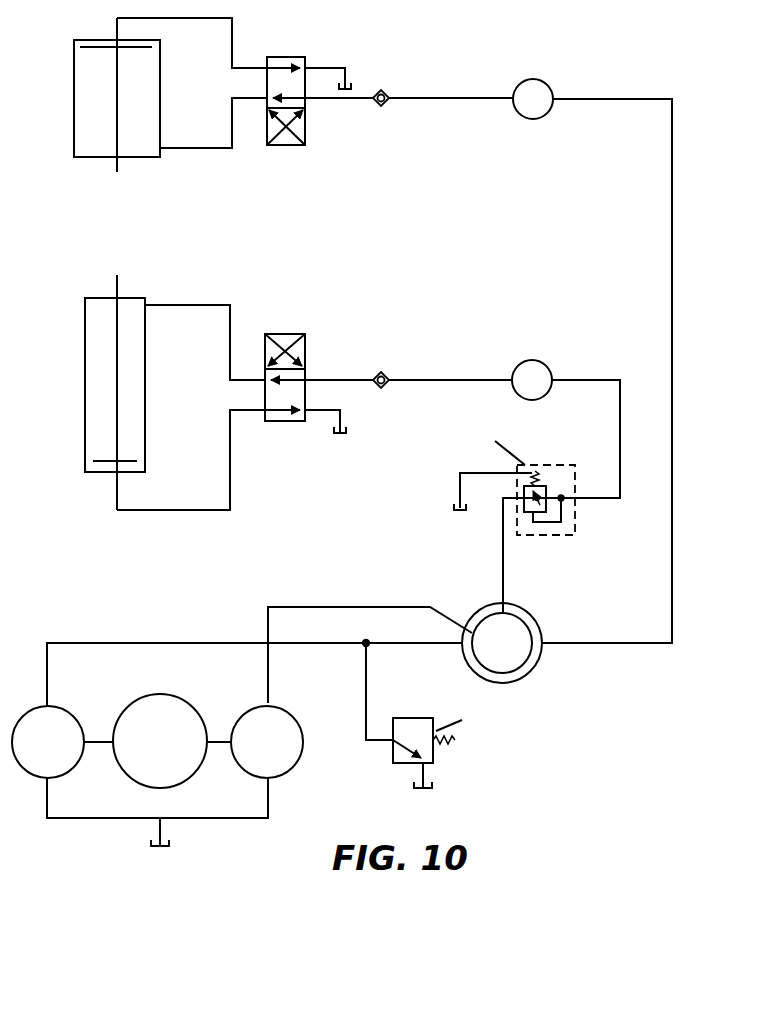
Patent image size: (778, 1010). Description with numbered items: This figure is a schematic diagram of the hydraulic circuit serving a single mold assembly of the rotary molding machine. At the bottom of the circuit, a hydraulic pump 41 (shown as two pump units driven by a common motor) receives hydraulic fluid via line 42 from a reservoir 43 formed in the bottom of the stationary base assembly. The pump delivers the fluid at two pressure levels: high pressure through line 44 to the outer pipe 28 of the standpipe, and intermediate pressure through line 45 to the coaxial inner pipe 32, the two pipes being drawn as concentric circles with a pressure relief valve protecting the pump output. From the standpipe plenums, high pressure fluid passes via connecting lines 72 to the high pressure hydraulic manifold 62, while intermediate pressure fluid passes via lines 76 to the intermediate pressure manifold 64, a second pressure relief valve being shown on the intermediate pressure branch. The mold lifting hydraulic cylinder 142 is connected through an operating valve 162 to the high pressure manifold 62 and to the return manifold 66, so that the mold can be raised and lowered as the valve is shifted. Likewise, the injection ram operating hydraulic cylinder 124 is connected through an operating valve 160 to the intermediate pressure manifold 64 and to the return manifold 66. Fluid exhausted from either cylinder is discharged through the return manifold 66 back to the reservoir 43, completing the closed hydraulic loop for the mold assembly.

The mold lifting hydraulic cylinder 142 is at (74, 95).
The operating valve 162 is at (300, 57).
The return manifold 66 is at (348, 84).
The high pressure hydraulic manifold 62 is at (547, 83).
The connecting lines 72 is at (672, 244).
The injection ram operating hydraulic cylinder 124 is at (85, 349).
The injection ram operating valve 160 is at (300, 331).
The intermediate pressure manifold 64 is at (535, 360).
The lines 76 is at (622, 420).
The outer pipe 28 is at (530, 614).
The inner pipe 32 is at (471, 660).
The high pressure line 44 is at (132, 643).
The intermediate pressure line 45 is at (365, 607).
The hydraulic pump 41 is at (54, 767).
The line 42 is at (95, 818).
The reservoir 43 is at (162, 850).